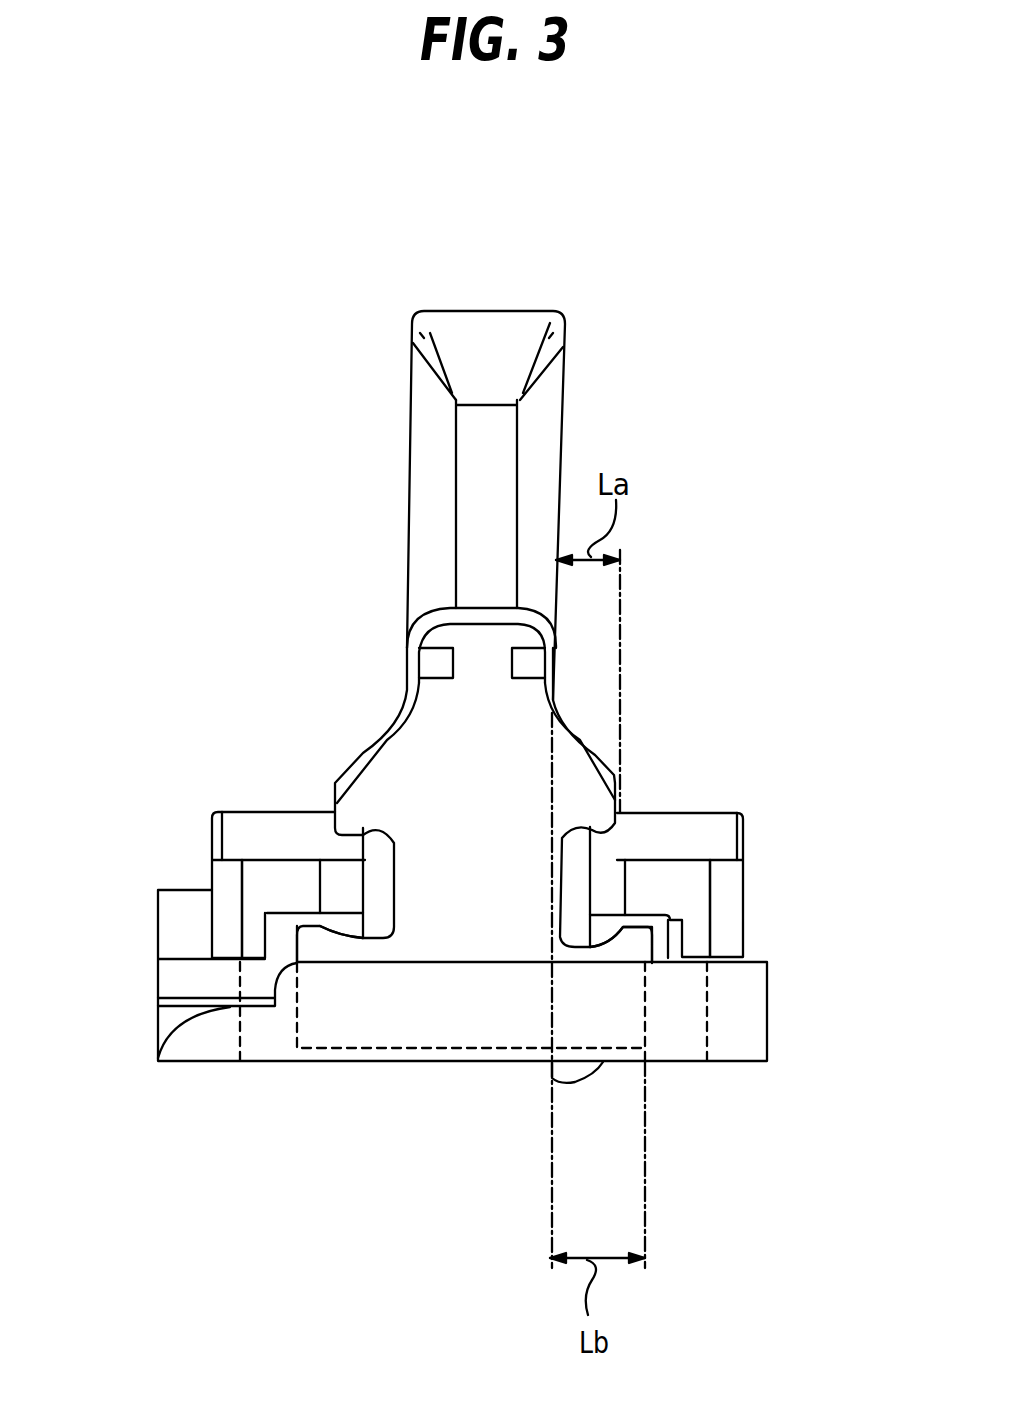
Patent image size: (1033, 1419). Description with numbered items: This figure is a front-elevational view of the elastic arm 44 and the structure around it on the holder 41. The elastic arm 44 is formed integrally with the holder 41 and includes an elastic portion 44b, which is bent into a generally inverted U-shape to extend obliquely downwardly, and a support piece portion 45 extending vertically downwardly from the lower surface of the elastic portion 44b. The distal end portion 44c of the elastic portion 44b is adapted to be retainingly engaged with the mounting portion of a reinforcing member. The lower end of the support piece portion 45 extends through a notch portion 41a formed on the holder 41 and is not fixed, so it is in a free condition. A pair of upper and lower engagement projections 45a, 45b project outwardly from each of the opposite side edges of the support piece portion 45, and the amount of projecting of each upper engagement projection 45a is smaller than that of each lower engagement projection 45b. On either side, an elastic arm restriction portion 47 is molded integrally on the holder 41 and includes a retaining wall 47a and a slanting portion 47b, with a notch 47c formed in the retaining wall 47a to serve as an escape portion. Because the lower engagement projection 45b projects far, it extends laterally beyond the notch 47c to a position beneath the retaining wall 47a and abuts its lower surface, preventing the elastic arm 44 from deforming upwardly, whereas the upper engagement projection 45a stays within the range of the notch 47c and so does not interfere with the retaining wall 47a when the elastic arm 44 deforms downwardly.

The holder 41 is at (205, 1100).
The notch portion 41a is at (273, 1037).
The elastic arm 44 is at (516, 252).
The elastic portion 44b is at (477, 474).
The distal end portion 44c is at (487, 650).
The support piece portion 45 is at (458, 935).
The upper engagement projection 45a is at (380, 792).
The lower engagement projection 45b is at (313, 943).
The elastic arm restriction portion 47 is at (187, 770).
The retaining wall 47a is at (298, 858).
The slanting portion 47b is at (245, 836).
The notch 47c is at (335, 876).